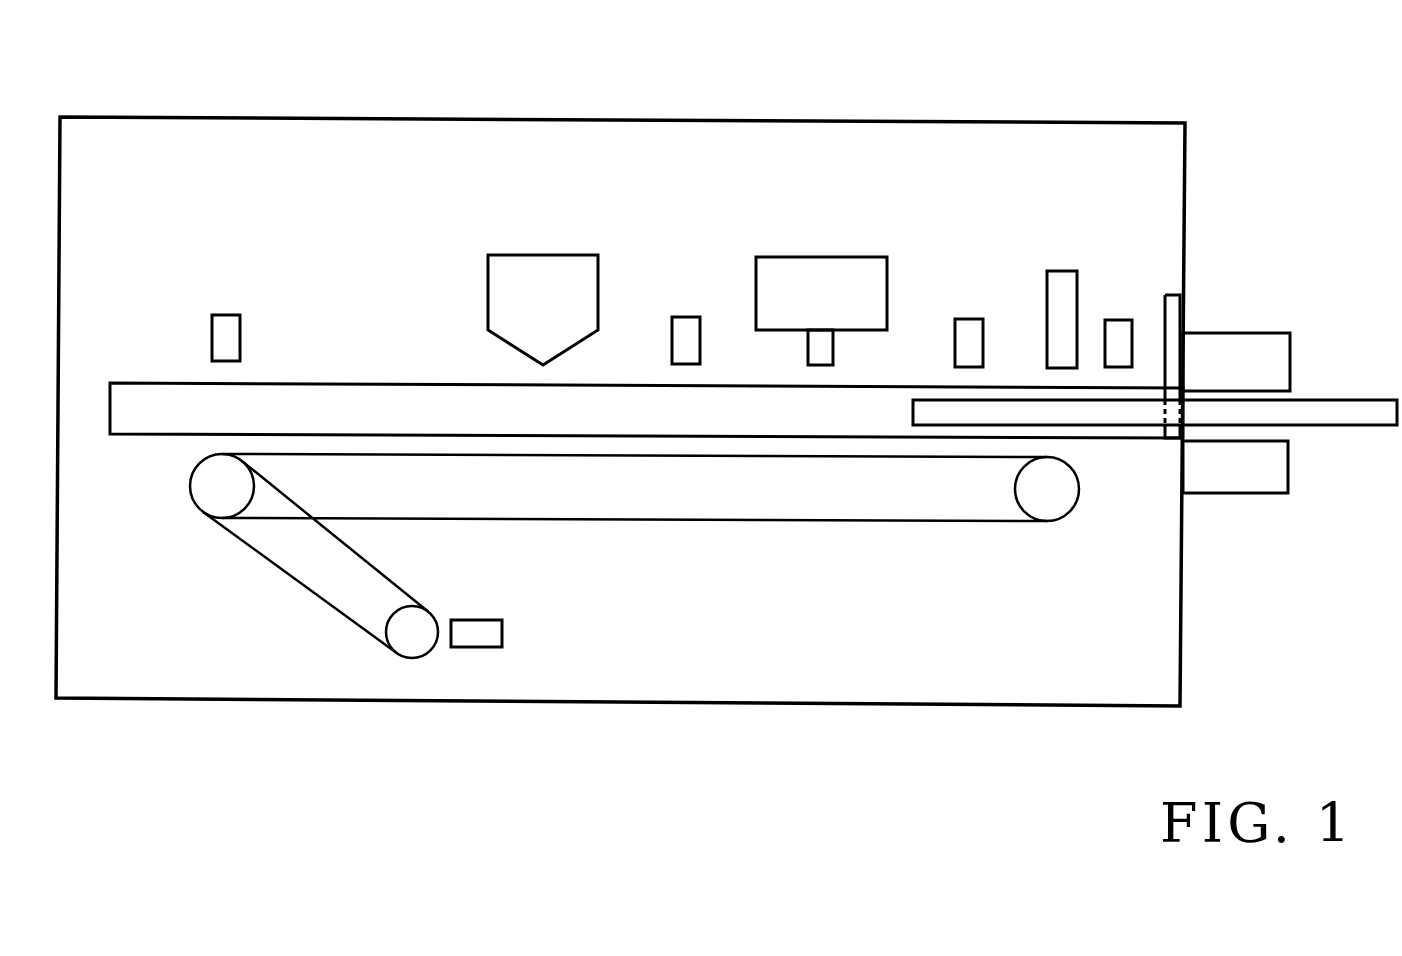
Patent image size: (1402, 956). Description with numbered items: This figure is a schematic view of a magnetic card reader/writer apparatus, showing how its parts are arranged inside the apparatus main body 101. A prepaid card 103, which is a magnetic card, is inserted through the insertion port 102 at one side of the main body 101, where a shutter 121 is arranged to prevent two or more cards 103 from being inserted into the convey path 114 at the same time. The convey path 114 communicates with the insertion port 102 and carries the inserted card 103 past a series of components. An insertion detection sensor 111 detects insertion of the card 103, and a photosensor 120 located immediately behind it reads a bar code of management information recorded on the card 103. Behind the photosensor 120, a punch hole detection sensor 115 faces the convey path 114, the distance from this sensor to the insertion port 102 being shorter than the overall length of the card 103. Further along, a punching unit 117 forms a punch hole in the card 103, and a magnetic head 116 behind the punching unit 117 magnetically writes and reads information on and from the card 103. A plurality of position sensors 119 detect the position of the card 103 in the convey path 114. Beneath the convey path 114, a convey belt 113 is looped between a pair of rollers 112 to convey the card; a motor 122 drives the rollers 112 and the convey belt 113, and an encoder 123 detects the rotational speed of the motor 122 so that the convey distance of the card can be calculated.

The apparatus main body 101 is at (988, 142).
The insertion port 102 is at (1255, 347).
The prepaid card 103 is at (1352, 413).
The insertion detection sensor 111 is at (1118, 330).
The rollers 112 is at (204, 488).
The convey belt 113 is at (705, 521).
The convey path 114 is at (148, 398).
The punch hole detection sensor 115 is at (969, 332).
The magnetic head 116 is at (525, 273).
The punching unit 117 is at (787, 275).
The position sensors 119 is at (228, 325).
The photosensor 120 is at (1066, 285).
The shutter 121 is at (1175, 302).
The motor 122 is at (413, 642).
The encoder 123 is at (483, 632).